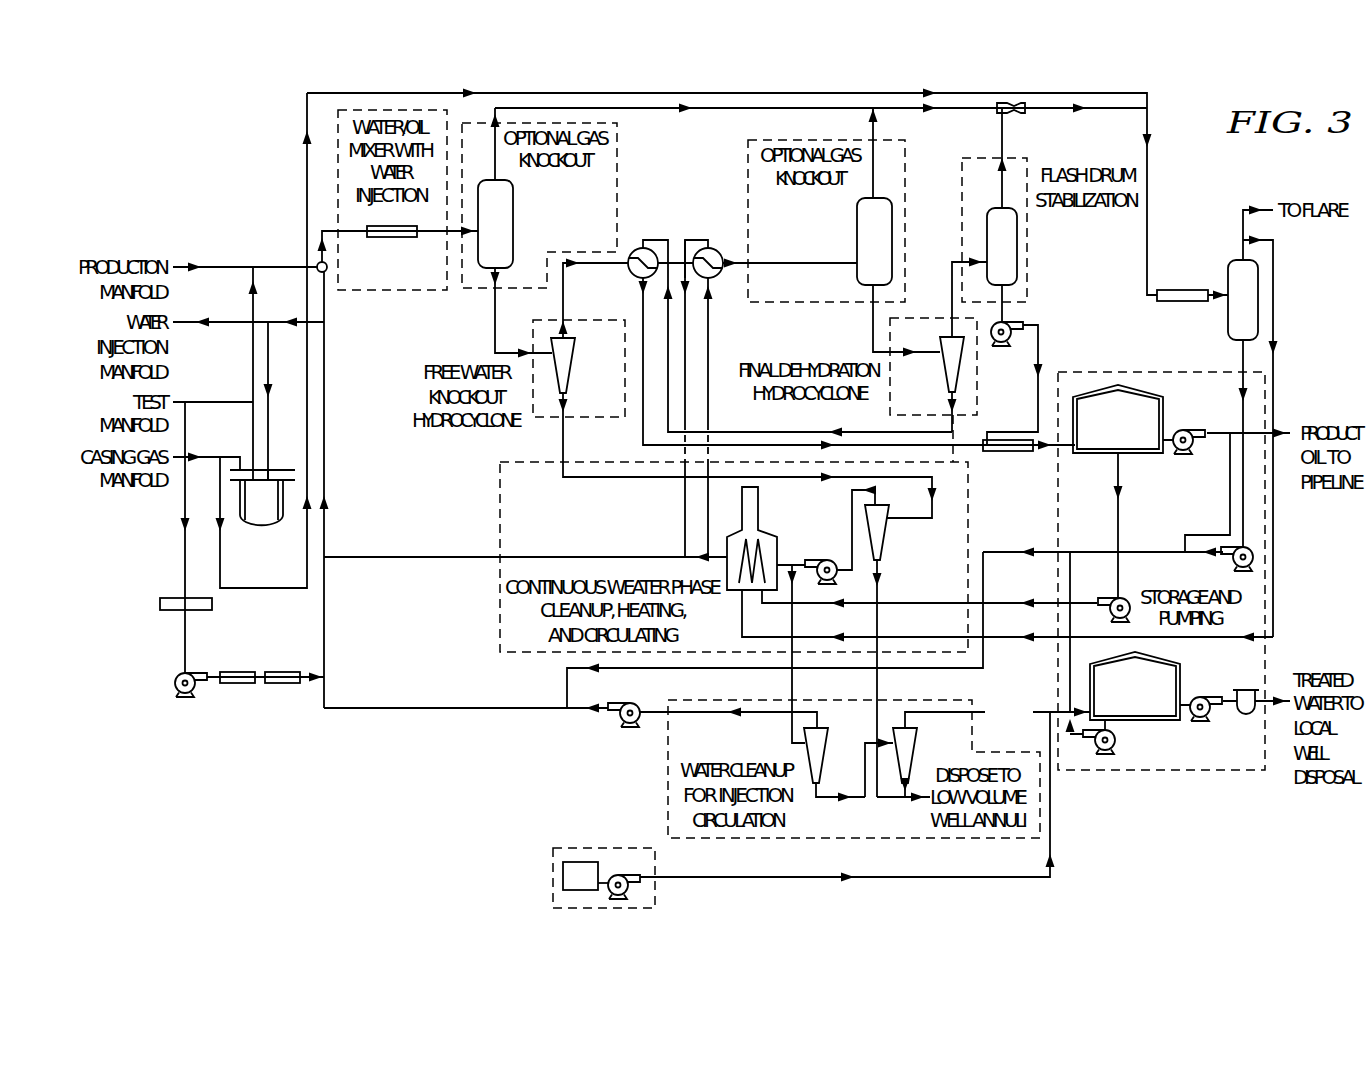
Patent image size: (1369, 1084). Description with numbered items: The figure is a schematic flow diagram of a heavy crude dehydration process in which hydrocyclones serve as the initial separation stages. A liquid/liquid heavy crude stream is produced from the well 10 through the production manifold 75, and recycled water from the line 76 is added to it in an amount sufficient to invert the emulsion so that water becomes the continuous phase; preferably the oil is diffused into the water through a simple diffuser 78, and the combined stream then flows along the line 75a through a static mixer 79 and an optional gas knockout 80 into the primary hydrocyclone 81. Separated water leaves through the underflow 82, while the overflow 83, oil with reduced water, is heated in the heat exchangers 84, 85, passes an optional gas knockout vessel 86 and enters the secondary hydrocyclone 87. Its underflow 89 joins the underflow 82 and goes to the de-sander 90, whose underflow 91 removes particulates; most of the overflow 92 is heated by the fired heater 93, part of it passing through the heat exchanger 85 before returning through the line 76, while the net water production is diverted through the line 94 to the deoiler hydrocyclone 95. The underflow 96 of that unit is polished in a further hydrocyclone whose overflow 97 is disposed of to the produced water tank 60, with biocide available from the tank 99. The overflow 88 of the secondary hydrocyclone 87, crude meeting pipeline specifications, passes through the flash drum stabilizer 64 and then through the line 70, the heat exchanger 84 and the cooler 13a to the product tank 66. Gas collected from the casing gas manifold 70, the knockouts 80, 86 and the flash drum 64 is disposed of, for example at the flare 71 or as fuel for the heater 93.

The production manifold 75 is at (225, 266).
The production flow line to mixer 75a is at (320, 231).
The diffuser 78 is at (316, 265).
The mixer 79 is at (393, 238).
The line 76 is at (326, 470).
The casing gas manifold 70 is at (234, 457).
The well 10 is at (281, 526).
The gas knockout 80 is at (504, 216).
The overflow 83 is at (559, 297).
The primary hydrocyclone 81 is at (569, 364).
The underflow 82 is at (559, 430).
The heat exchanger 84 is at (634, 276).
The heat exchanger 85 is at (717, 247).
The gas knockout vessel 86 is at (856, 240).
The overflow 88 is at (952, 265).
The secondary hydrocyclone 87 is at (943, 362).
The underflow 89 is at (949, 401).
The flash drum stabilizer 64 is at (997, 210).
The flare 71 is at (1247, 207).
The cooler 13a is at (1008, 452).
The product tank 66 is at (1118, 419).
The produced water tank 60 is at (1135, 686).
The fired heater 93 is at (762, 530).
The overflow 92 is at (852, 532).
The de-sander 90 is at (883, 535).
The line 94 is at (790, 680).
The underflow 91 is at (880, 682).
The deoiler hydrocyclone 95 is at (826, 739).
The underflow 96 is at (832, 800).
The overflow 97 is at (917, 744).
The tank 99 is at (546, 870).